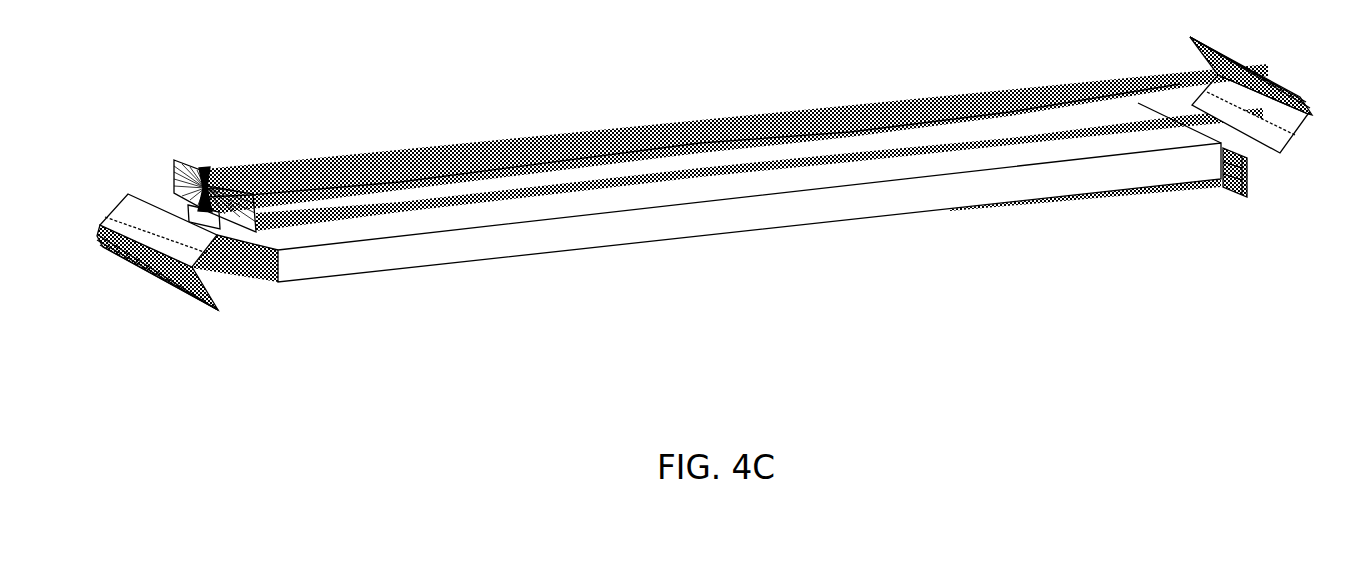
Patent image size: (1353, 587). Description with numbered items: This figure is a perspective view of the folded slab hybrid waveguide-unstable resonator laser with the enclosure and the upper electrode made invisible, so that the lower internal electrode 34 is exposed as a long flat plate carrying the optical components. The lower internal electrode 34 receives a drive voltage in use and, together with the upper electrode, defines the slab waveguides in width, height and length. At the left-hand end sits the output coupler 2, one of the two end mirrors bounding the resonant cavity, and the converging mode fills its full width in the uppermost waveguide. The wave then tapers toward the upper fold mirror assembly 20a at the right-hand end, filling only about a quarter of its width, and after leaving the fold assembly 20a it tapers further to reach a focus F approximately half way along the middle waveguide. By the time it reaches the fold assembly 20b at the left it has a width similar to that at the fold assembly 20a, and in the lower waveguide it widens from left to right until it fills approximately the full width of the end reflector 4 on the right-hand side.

The output coupler 2 is at (175, 160).
The end reflector 4 is at (1248, 197).
The upper fold mirror assembly 20a is at (1280, 153).
The fold assembly 20b is at (208, 308).
The lower internal electrode 34 is at (308, 265).
The focus F is at (783, 172).